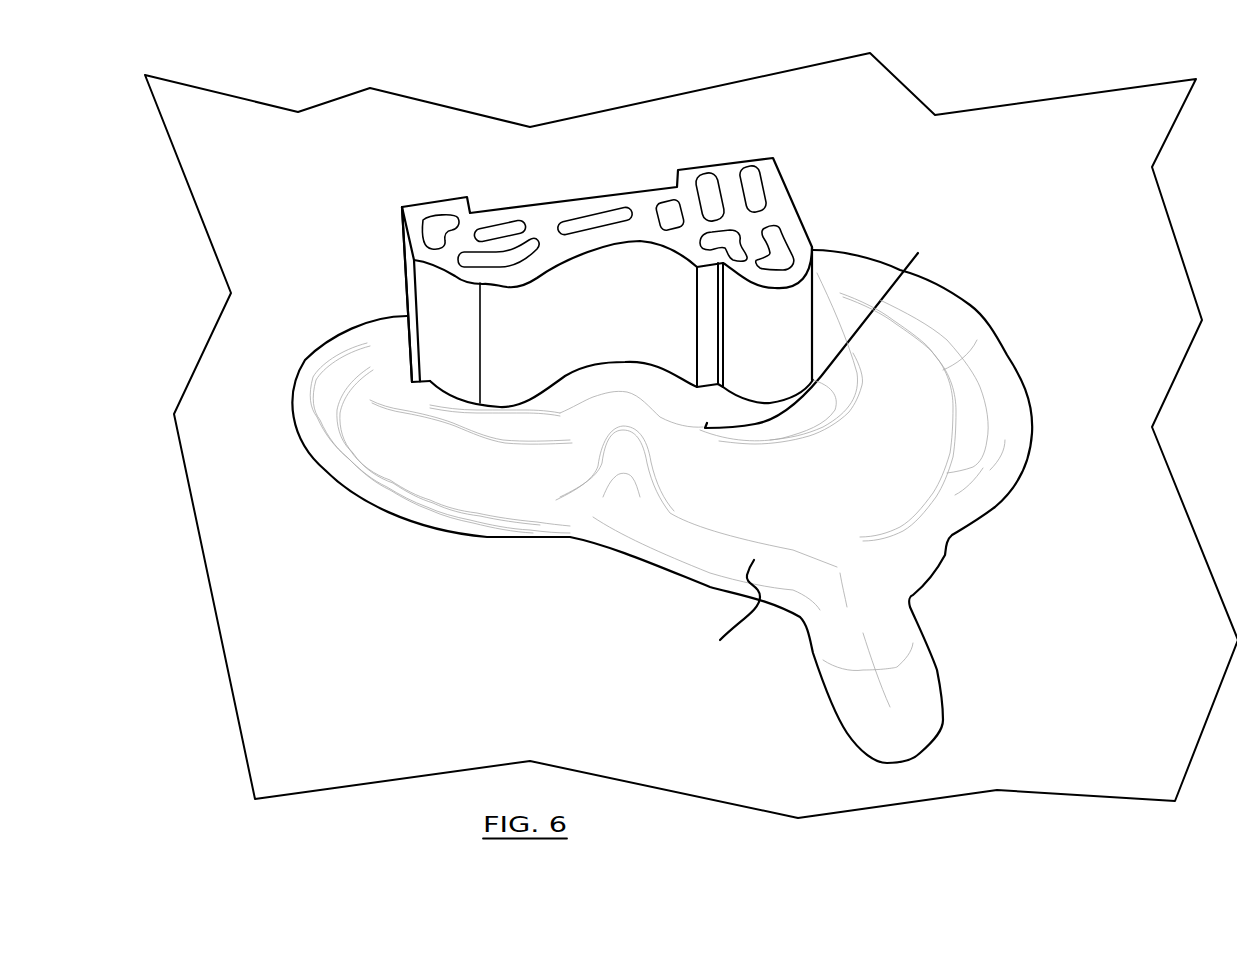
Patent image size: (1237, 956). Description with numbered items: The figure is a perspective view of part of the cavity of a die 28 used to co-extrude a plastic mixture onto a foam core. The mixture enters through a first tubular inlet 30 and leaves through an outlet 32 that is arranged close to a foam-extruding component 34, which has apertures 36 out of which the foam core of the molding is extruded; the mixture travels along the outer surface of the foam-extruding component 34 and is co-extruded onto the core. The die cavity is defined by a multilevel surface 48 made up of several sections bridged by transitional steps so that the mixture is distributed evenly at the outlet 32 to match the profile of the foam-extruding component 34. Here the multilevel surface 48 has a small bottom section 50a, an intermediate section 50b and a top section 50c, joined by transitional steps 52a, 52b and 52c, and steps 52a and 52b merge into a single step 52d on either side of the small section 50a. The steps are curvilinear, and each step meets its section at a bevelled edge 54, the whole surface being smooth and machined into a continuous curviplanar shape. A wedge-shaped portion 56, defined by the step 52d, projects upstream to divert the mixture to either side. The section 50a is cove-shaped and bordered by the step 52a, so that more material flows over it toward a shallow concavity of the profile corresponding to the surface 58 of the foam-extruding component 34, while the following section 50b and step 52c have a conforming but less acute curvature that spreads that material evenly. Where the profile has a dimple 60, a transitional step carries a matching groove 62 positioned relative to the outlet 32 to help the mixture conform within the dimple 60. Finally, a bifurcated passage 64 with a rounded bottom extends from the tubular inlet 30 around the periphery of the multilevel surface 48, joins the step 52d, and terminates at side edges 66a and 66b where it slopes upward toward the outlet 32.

The die 28 is at (1021, 86).
The tubular inlet 30 is at (908, 765).
The outlet 32 is at (557, 379).
The foam-extruding component 34 is at (402, 203).
The apertures 36 is at (667, 197).
The multilevel surface 48 is at (1023, 335).
The small bottom section 50a is at (620, 505).
The intermediate section 50b is at (492, 483).
The top section 50c is at (453, 417).
The transitional step 52a is at (603, 522).
The transitional step 52b is at (645, 497).
The transitional step 52c is at (383, 410).
The single step 52d is at (692, 544).
The bevelled edge 54 is at (723, 610).
The wedge-shaped portion 56 is at (847, 582).
The surface 58 is at (617, 318).
The dimple 60 is at (723, 323).
The groove 62 is at (823, 341).
The bifurcated passage 64 is at (851, 621).
The side edge 66a is at (394, 335).
The side edge 66b is at (817, 328).